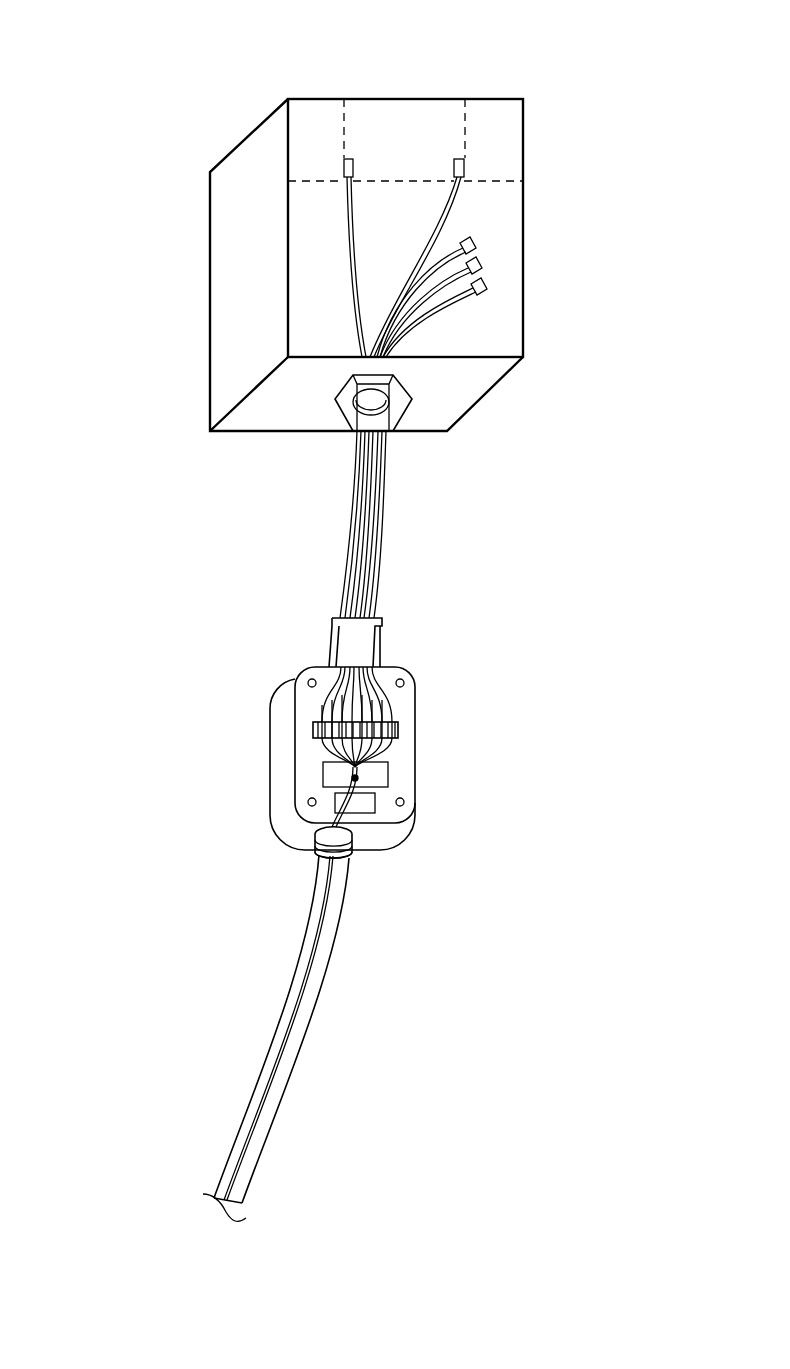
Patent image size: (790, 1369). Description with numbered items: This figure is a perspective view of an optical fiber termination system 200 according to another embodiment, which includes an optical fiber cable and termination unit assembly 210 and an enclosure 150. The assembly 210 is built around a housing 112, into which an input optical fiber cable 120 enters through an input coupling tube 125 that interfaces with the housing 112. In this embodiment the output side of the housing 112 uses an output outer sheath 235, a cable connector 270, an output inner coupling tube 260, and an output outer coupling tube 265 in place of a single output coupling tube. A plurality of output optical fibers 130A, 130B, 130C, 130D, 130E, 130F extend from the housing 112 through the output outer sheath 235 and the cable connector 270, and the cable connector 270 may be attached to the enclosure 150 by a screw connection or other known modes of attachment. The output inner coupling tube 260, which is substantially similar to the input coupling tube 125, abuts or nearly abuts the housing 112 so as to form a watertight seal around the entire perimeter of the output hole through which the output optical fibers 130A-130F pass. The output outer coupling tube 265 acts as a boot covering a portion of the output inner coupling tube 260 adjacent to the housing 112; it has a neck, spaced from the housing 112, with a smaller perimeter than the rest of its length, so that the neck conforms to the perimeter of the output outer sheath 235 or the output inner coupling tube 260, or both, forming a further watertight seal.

The optical fiber termination system 200 is at (143, 45).
The enclosure 150 is at (511, 322).
The cable connector 270 is at (395, 410).
The output outer sheath 235 is at (362, 497).
The optical fiber cable and termination unit assembly 210 is at (487, 585).
The output outer coupling tube 265 is at (333, 640).
The output inner coupling tube 260 is at (372, 642).
The output optical fiber 130A is at (335, 712).
The output optical fiber 130B is at (342, 703).
The output optical fiber 130C is at (350, 696).
The output optical fiber 130D is at (352, 693).
The output optical fiber 130E is at (354, 714).
The output optical fiber 130F is at (368, 714).
The housing 112 is at (403, 777).
The input coupling tube 125 is at (348, 858).
The input optical fiber cable 120 is at (315, 1032).